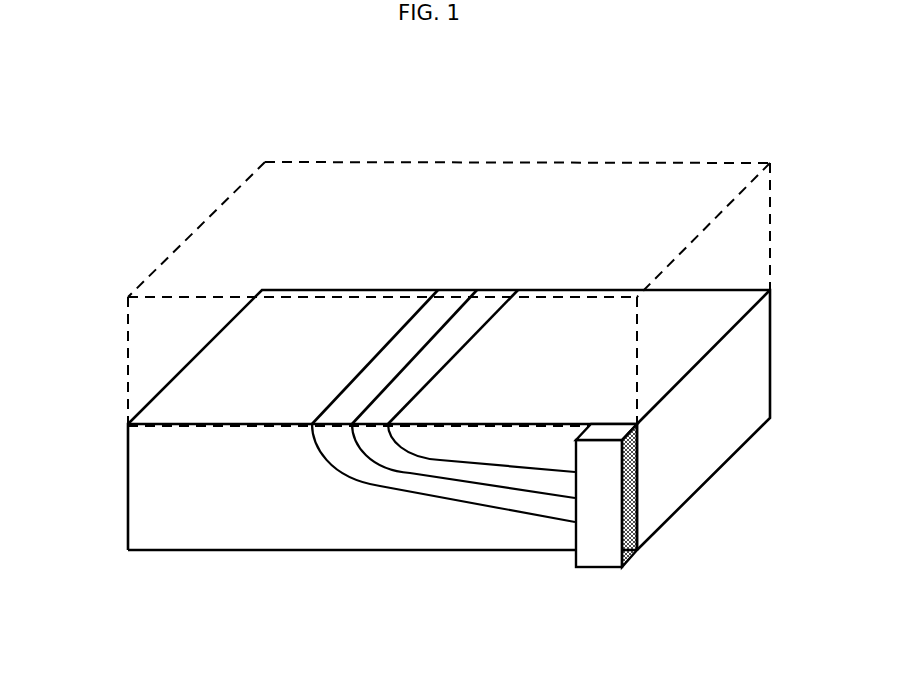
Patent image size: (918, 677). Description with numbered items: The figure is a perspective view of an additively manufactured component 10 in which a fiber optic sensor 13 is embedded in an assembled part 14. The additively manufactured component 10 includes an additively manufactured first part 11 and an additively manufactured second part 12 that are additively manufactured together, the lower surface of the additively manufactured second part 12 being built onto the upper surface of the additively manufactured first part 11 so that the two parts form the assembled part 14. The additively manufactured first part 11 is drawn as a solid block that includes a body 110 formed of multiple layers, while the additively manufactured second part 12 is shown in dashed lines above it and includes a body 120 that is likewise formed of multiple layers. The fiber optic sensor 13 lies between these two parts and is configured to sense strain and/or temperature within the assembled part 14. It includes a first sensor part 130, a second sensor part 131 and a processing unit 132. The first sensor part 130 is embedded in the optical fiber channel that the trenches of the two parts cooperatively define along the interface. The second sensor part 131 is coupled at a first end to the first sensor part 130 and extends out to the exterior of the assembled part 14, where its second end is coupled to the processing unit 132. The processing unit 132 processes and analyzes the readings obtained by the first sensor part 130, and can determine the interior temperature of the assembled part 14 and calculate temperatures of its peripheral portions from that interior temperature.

The additively manufactured component 10 is at (600, 140).
The additively manufactured first part 11 is at (132, 547).
The additively manufactured second part 12 is at (153, 282).
The fiber optic sensor 13 is at (354, 489).
The assembled part 14 is at (198, 218).
The body 110 is at (218, 519).
The body 120 is at (285, 264).
The first sensor part 130 is at (485, 324).
The second sensor part 131 is at (462, 460).
The processing unit 132 is at (595, 537).